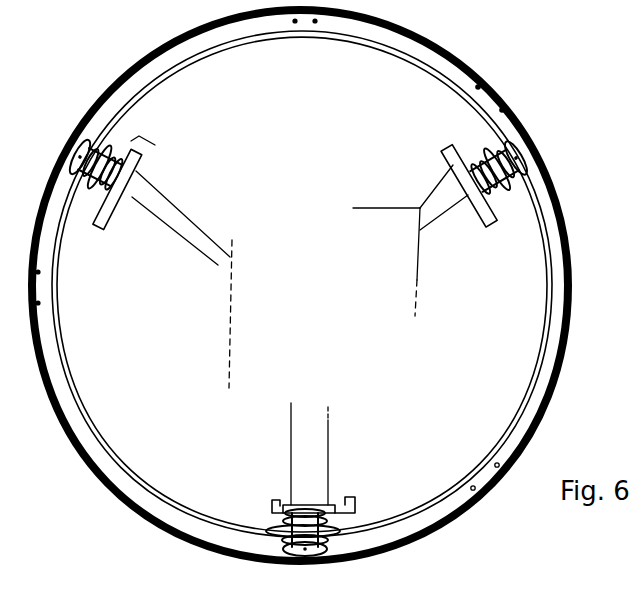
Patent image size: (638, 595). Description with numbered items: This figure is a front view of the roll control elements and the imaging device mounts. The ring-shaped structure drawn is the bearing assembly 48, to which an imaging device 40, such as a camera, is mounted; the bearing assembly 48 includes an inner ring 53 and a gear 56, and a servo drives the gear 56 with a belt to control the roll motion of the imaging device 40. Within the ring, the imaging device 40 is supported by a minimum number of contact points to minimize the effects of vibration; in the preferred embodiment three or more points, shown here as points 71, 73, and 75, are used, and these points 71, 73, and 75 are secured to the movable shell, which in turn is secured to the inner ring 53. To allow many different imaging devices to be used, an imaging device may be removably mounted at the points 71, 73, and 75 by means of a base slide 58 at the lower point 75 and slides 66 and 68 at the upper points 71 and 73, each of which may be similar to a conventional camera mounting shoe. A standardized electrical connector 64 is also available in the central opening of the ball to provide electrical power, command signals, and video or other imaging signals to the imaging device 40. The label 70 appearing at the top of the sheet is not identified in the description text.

The imaging device 40 is at (331, 308).
The bearing assembly 48 is at (300, 285).
The inner ring 53 is at (553, 200).
The gear 56 is at (85, 466).
The base slide 58 is at (360, 497).
The connector 64 is at (498, 268).
The slide 66 is at (125, 157).
The slide 68 is at (492, 169).
The hub 70 is at (557, 7).
The point 71 is at (136, 224).
The point 73 is at (463, 226).
The point 75 is at (270, 486).